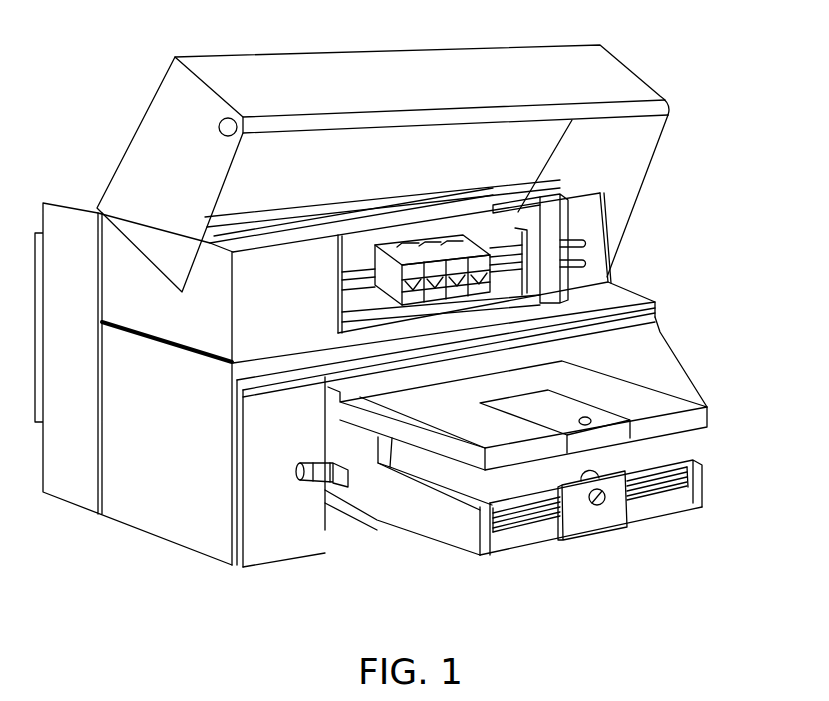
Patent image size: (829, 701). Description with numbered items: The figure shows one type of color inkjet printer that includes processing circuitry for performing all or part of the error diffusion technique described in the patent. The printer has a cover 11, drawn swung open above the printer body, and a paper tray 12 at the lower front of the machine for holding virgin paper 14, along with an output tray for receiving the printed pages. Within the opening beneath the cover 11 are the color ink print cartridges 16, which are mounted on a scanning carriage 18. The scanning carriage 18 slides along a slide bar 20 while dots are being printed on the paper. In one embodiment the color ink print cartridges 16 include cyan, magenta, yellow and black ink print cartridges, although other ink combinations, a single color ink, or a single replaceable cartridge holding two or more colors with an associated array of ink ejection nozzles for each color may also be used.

The cover 11 is at (157, 90).
The paper tray 12 is at (527, 535).
The virgin paper 14 is at (687, 483).
The color ink print cartridges 16 is at (688, 392).
The scanning carriage 18 is at (340, 298).
The slide bar 20 is at (600, 262).